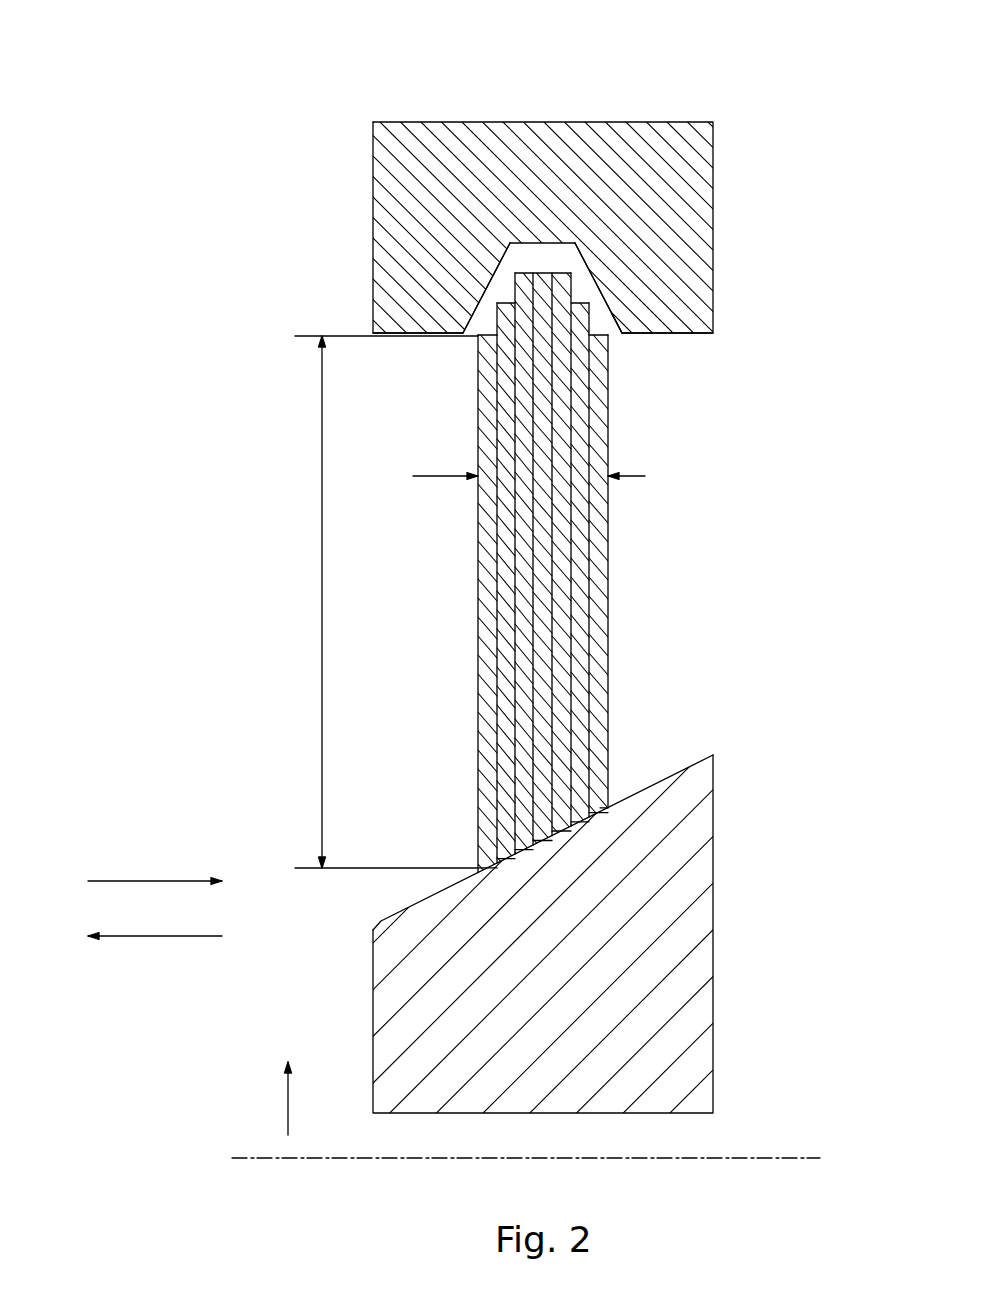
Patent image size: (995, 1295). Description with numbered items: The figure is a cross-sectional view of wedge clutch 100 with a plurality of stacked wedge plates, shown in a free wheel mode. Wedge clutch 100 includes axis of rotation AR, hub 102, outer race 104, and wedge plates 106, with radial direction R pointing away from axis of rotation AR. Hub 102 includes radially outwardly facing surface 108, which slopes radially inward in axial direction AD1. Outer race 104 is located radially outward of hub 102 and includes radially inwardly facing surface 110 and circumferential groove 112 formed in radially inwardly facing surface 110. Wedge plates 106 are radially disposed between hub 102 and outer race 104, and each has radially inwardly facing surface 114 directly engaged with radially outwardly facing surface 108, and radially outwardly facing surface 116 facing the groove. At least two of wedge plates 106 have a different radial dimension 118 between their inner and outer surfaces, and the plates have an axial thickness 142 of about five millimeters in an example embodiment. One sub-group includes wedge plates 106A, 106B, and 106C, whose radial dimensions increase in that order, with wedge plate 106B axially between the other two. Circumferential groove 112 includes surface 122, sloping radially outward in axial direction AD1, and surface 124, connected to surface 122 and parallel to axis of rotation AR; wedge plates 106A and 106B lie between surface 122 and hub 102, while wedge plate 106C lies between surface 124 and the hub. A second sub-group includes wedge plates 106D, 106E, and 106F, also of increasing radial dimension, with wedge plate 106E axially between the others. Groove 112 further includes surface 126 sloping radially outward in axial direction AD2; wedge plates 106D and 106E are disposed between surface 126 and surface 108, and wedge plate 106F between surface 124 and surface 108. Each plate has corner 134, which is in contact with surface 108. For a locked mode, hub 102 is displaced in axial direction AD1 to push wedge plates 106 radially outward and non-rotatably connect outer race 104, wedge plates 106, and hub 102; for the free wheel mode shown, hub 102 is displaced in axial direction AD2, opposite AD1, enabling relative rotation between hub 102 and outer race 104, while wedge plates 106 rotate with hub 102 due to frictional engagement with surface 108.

The wedge clutch 100 is at (802, 67).
The hub 102 is at (599, 934).
The outer race 104 is at (722, 195).
The wedge plates 106 is at (541, 565).
The wedge plate 106A is at (595, 616).
The wedge plate 106B is at (578, 572).
The wedge plate 106C is at (558, 525).
The wedge plate 106D is at (485, 668).
The wedge plate 106E is at (505, 710).
The wedge plate 106F is at (525, 756).
The radially outwardly facing surface 108 is at (385, 922).
The radially inwardly facing surface 110 is at (707, 336).
The circumferential groove 112 is at (540, 238).
The radially inwardly facing surface 114 is at (478, 872).
The radially outwardly facing surface 116 is at (615, 320).
The radial dimension 118 is at (322, 574).
The surface 122 is at (607, 305).
The surface 124 is at (549, 244).
The surface 126 is at (482, 305).
The corner 134 is at (600, 806).
The axial thickness 142 is at (458, 474).
The axial direction AD1 is at (153, 936).
The axial direction AD2 is at (130, 881).
The radial direction R is at (288, 1088).
The axis of rotation AR is at (792, 1158).